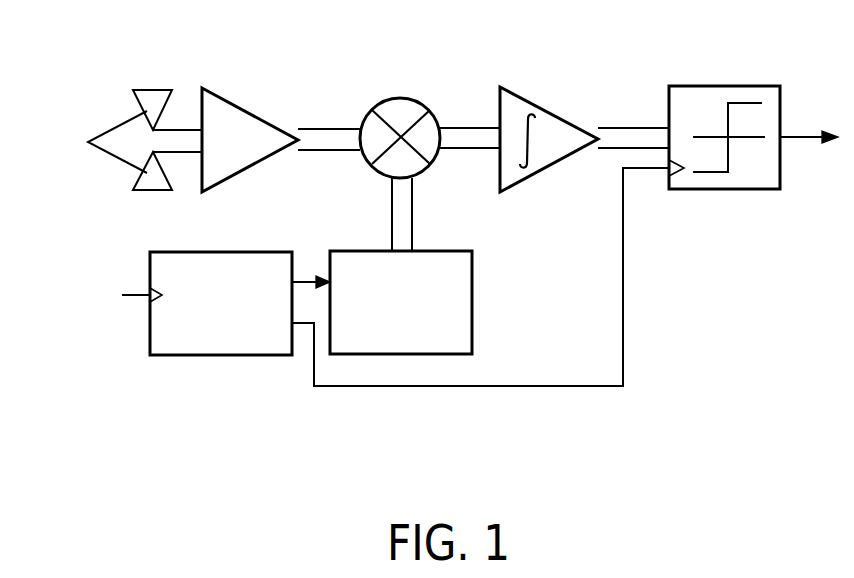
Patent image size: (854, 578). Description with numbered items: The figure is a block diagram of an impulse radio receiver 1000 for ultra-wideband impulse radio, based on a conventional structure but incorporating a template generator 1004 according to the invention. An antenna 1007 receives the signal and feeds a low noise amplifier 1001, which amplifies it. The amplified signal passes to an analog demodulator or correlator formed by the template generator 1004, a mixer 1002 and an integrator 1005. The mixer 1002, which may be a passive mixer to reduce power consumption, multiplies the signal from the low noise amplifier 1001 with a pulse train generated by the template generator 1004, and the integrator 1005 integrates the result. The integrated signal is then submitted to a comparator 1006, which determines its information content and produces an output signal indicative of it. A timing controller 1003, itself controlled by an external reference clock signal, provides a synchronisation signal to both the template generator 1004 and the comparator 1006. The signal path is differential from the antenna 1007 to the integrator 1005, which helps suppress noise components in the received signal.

The impulse radio receiver 1000 is at (663, 273).
The low noise amplifier 1001 is at (237, 117).
The mixer 1002 is at (410, 107).
The timing controller 1003 is at (203, 347).
The template generator 1004 is at (440, 348).
The integrator 1005 is at (547, 118).
The comparator 1006 is at (713, 93).
The antenna 1007 is at (98, 140).